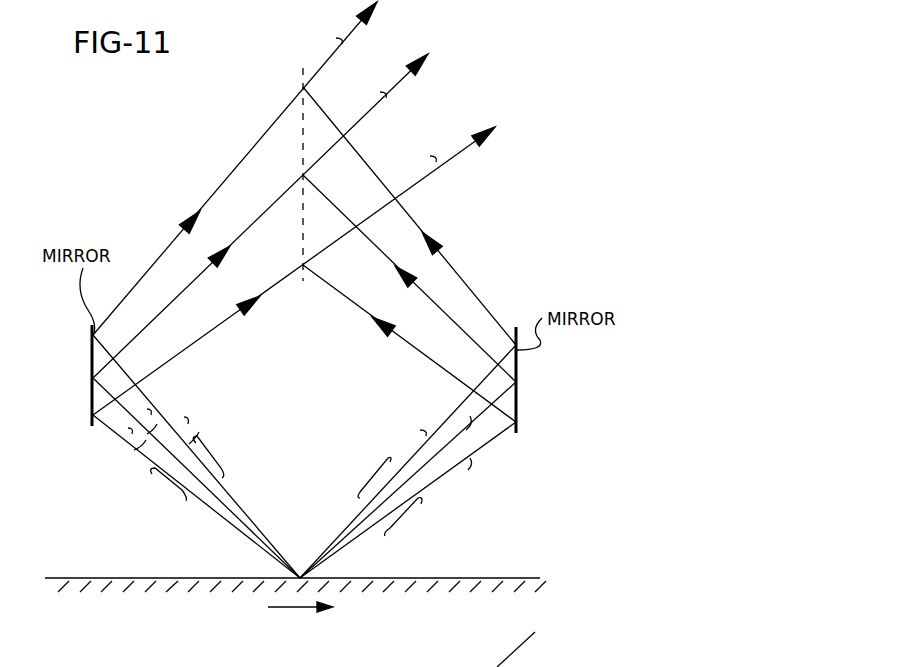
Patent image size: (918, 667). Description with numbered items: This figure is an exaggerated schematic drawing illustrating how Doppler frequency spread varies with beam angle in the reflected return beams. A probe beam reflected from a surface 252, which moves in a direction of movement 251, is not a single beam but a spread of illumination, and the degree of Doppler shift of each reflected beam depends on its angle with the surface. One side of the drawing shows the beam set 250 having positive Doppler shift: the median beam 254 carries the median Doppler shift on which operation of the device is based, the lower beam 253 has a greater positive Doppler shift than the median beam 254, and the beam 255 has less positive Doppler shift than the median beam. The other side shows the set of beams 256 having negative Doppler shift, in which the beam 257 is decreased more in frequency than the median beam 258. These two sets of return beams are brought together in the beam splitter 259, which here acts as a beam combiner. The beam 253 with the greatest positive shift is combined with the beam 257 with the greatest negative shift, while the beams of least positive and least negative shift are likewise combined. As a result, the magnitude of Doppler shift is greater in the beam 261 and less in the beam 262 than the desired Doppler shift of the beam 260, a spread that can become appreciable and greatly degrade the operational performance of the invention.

The beam set having positive Doppler shift 250 is at (418, 510).
The direction of movement 251 is at (284, 608).
The surface 252 is at (152, 578).
The lower beam 253 is at (477, 450).
The median beam 254 is at (474, 421).
The beam 255 is at (462, 401).
The set of beams having negative Doppler shift 256 is at (168, 488).
The beam 257 is at (202, 502).
The median beam 258 is at (134, 450).
The beam splitter 259 is at (301, 158).
The beam 260 is at (404, 82).
The beam 261 is at (461, 158).
The beam 262 is at (352, 35).